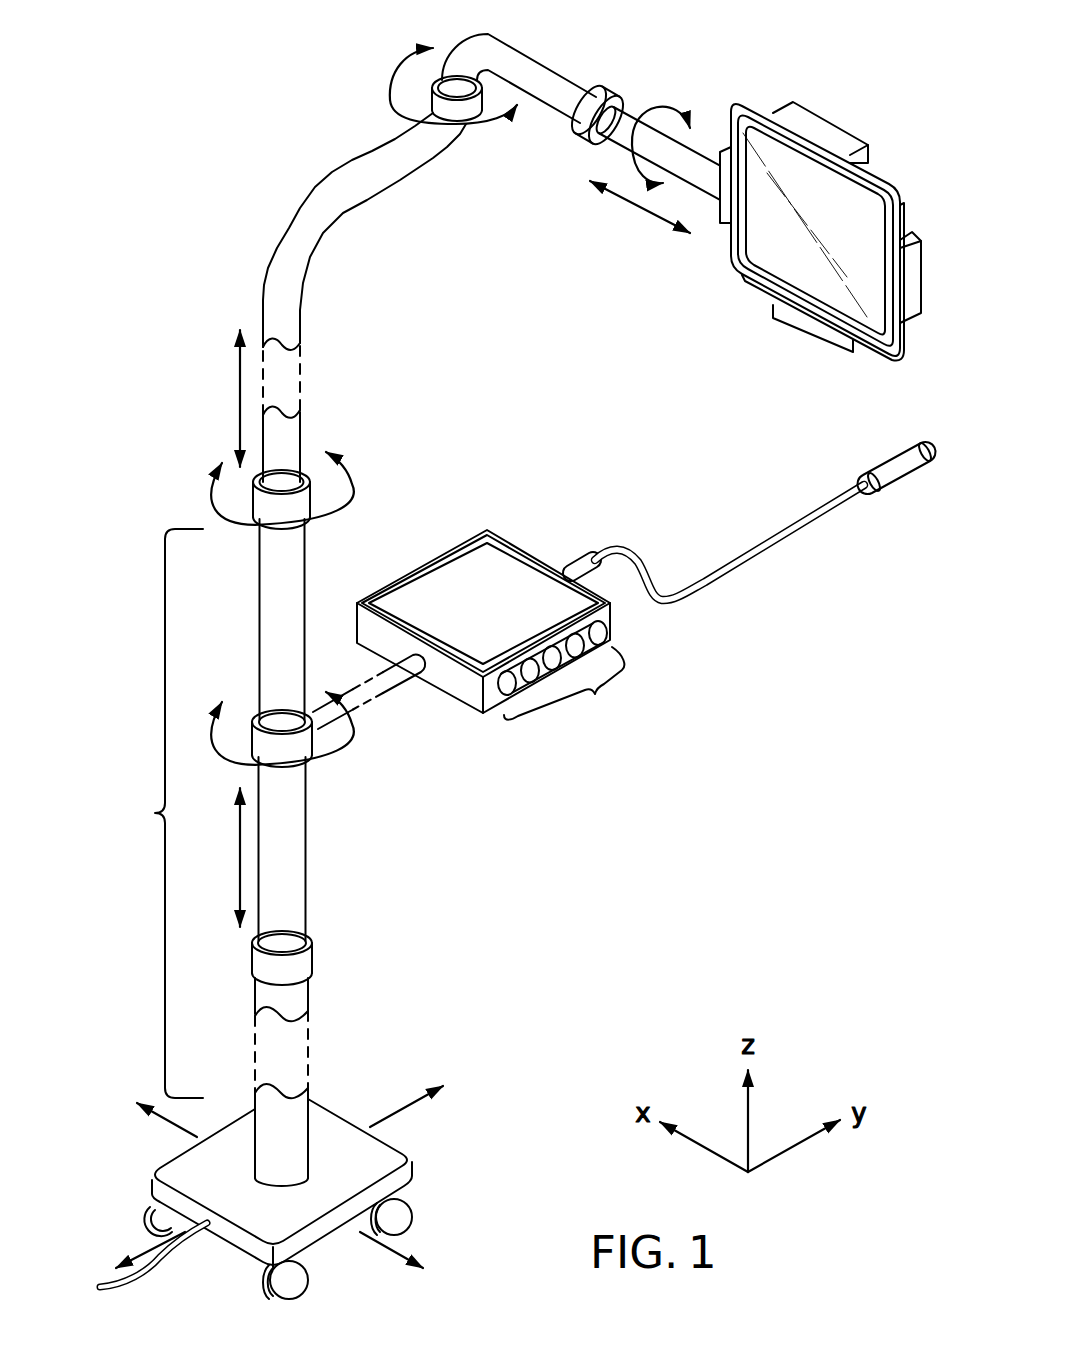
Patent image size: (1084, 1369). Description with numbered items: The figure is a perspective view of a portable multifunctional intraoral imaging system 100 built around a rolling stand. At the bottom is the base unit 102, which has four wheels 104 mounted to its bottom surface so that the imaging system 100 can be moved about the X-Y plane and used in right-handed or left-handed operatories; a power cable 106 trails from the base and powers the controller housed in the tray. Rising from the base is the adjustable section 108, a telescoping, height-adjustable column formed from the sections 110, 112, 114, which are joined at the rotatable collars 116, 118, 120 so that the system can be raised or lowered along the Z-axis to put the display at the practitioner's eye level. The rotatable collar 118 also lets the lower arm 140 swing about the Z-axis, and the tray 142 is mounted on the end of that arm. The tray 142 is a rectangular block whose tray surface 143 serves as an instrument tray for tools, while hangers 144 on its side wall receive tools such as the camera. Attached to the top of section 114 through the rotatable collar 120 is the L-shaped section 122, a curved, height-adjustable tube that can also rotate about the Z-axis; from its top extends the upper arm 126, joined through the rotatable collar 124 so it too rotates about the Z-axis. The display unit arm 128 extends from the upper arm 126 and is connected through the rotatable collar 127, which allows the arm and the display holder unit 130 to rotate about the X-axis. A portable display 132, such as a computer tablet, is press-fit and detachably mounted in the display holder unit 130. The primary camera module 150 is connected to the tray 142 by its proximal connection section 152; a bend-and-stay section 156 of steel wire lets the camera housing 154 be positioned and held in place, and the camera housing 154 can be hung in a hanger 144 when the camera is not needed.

The portable multifunctional intraoral imaging system 100 is at (205, 112).
The base unit 102 is at (190, 1180).
The wheels 104 is at (410, 1214).
The power cable 106 is at (98, 1284).
The adjustable section 108 is at (152, 813).
The section 110 is at (308, 999).
The section 112 is at (306, 848).
The section 114 is at (306, 557).
The rotatable collar 116 is at (312, 953).
The rotatable collar 118 is at (305, 743).
The rotatable collar 120 is at (313, 498).
The L-shaped section 122 is at (289, 236).
The rotatable collar 124 is at (388, 96).
The upper arm 126 is at (558, 68).
The rotatable collar 127 is at (592, 118).
The display unit arm 128 is at (710, 160).
The display holder unit 130 is at (813, 125).
The portable display 132 is at (745, 262).
The lower arm 140 is at (403, 672).
The tray 142 is at (613, 621).
The tray surface 143 is at (464, 604).
The hangers 144 is at (572, 678).
The primary camera module 150 is at (630, 557).
The proximal connection section 152 is at (583, 556).
The camera housing 154 is at (888, 470).
The bend-and-stay section 156 is at (706, 589).